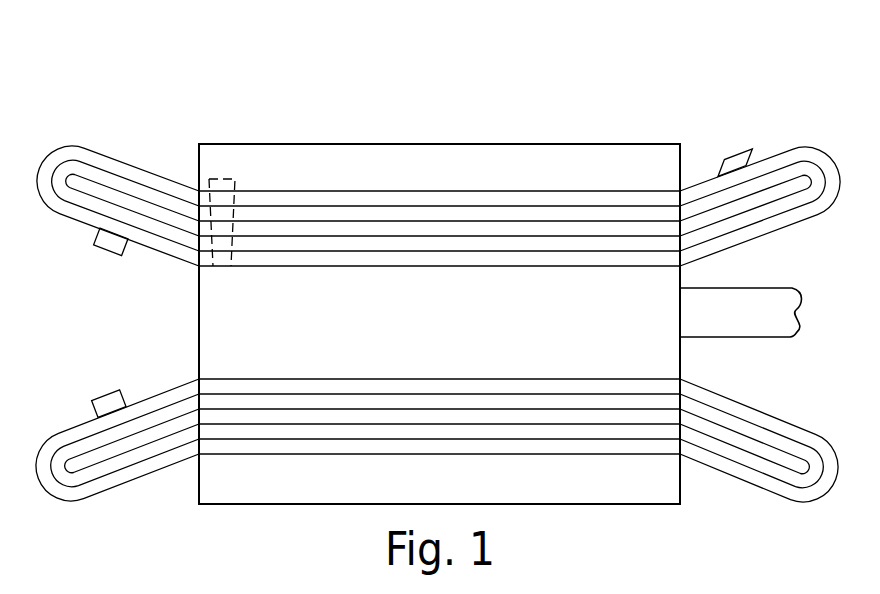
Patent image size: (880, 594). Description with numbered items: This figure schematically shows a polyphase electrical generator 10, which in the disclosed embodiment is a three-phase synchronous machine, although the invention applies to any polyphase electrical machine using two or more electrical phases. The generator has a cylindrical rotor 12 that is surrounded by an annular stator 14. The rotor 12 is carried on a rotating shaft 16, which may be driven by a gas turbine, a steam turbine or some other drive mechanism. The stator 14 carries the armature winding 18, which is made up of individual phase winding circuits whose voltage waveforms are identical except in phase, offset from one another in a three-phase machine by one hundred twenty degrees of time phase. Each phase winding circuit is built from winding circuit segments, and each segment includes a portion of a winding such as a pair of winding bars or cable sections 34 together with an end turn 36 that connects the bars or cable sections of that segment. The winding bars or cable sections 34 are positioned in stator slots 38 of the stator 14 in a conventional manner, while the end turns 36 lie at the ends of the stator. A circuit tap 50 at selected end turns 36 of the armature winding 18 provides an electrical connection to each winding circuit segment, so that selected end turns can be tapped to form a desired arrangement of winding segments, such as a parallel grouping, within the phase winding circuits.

The polyphase electrical generator 10 is at (411, 114).
The cylindrical rotor 12 is at (413, 321).
The annular stator 14 is at (616, 177).
The rotating shaft 16 is at (753, 288).
The armature winding 18 is at (439, 140).
The winding bars or cable sections 34 is at (393, 236).
The end turn 36 is at (800, 146).
The stator slots 38 is at (225, 178).
The circuit tap 50 is at (733, 154).